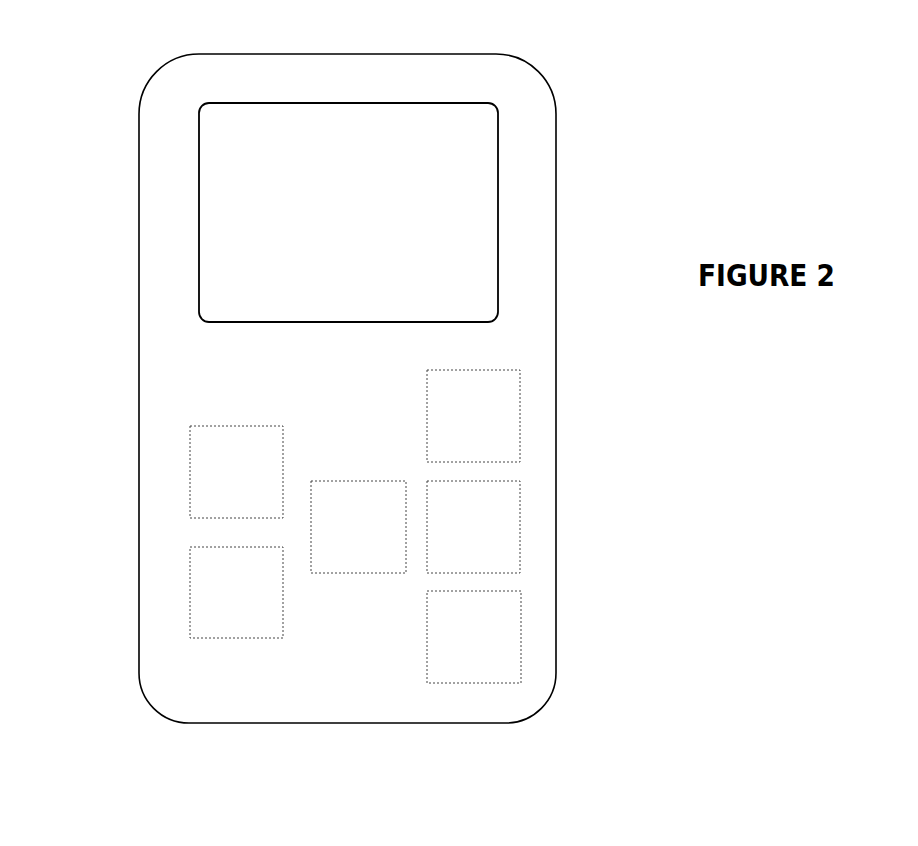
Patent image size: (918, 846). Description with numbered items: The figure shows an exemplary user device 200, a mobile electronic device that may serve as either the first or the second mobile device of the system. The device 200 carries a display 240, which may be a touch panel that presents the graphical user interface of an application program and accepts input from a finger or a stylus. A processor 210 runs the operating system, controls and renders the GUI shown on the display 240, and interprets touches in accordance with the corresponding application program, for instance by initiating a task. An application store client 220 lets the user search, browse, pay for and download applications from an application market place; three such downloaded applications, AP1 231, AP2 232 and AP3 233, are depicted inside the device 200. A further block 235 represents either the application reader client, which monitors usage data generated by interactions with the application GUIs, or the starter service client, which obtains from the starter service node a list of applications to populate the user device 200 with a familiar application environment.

The user device 200 is at (139, 162).
The display 240 is at (198, 105).
The processor 210 is at (228, 638).
The application store client 220 is at (190, 472).
The application reader client / starter service client 235 is at (340, 573).
The first application 231 is at (520, 417).
The second application 232 is at (520, 526).
The third application 233 is at (521, 637).